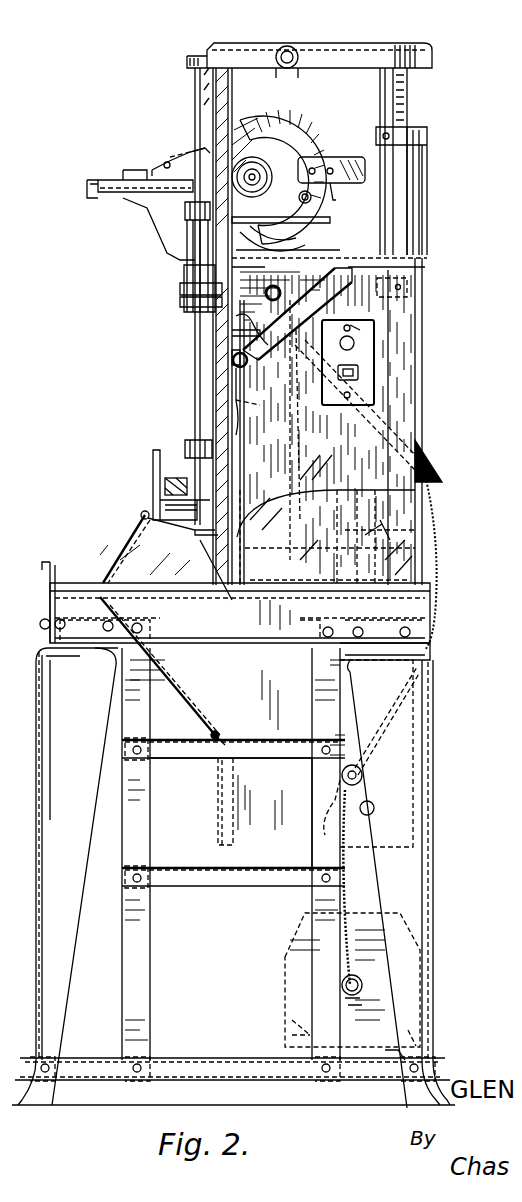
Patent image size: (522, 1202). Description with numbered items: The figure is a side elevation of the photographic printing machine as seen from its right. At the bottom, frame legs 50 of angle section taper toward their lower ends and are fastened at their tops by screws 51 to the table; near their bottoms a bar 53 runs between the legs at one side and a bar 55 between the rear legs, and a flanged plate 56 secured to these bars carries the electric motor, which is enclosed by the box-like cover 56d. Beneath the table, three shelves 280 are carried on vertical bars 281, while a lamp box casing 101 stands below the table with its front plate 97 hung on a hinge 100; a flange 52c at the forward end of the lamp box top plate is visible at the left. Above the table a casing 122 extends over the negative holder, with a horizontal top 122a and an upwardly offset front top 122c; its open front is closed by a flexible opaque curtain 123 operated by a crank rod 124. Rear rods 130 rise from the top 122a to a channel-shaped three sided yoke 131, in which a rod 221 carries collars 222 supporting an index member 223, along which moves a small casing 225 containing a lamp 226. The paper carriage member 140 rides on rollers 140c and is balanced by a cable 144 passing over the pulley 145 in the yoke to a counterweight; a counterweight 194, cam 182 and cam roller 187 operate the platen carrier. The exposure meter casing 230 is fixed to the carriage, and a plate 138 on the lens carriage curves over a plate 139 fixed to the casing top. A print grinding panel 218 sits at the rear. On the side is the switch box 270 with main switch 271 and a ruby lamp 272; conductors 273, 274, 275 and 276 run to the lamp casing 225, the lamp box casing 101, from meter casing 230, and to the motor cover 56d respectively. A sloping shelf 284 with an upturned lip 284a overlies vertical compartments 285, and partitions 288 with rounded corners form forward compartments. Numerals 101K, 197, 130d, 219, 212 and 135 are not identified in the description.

The pulley 145 is at (296, 46).
The three sided yoke 131 is at (432, 62).
The upper guide rod 101K is at (398, 88).
The rear rods 130 is at (386, 110).
The print grinding panel 218 is at (428, 172).
The rod 221 is at (195, 110).
The cord or cable 144 is at (236, 86).
The cam roller 187 is at (268, 150).
The cam 182 is at (281, 128).
The mounting plate 197 is at (308, 160).
The counterweight 194 is at (352, 195).
The paper carriage member 140 is at (312, 216).
The exposure meter casing 230 is at (322, 238).
The collars 222 is at (185, 202).
The index member 223 is at (187, 272).
The small casing 225 is at (177, 289).
The lamp 226 is at (177, 305).
The conductor 273 is at (196, 325).
The conductor 275 is at (296, 296).
The shelf 284 is at (250, 370).
The upwardly and forwardly extending portion 284a is at (291, 430).
The rollers 140c is at (269, 414).
The column rod lower 130d is at (245, 440).
The small ruby lamp 272 is at (350, 328).
The switch box or casing 270 is at (355, 341).
The main switch 271 is at (358, 372).
The cable anchor 219 is at (444, 470).
The conductor 274 is at (440, 514).
The vertically extending compartments 285 is at (400, 530).
The partitions 288 is at (330, 428).
The column foot 212 is at (185, 446).
The plate 138 is at (153, 450).
The pad 135 is at (184, 475).
The plate 139 is at (153, 484).
The crank rod 124 is at (132, 524).
The flexible opaque curtain 123 is at (118, 546).
The flange 52c is at (48, 562).
The casing top offset portion 122c is at (326, 513).
The casing top 122a is at (327, 537).
The casing 122 is at (200, 585).
The screws 51 is at (362, 626).
The front plate 97 is at (190, 710).
The hinge 100 is at (212, 734).
The shelves 280 is at (168, 746).
The lamp box casing 101 is at (236, 796).
The vertical bars 281 is at (312, 901).
The conductor 276 is at (350, 878).
The legs 50 is at (78, 918).
The box-like cover 56d is at (305, 920).
The plate 56 is at (320, 1013).
The bar 53 is at (183, 1060).
The bar 55 is at (395, 1058).